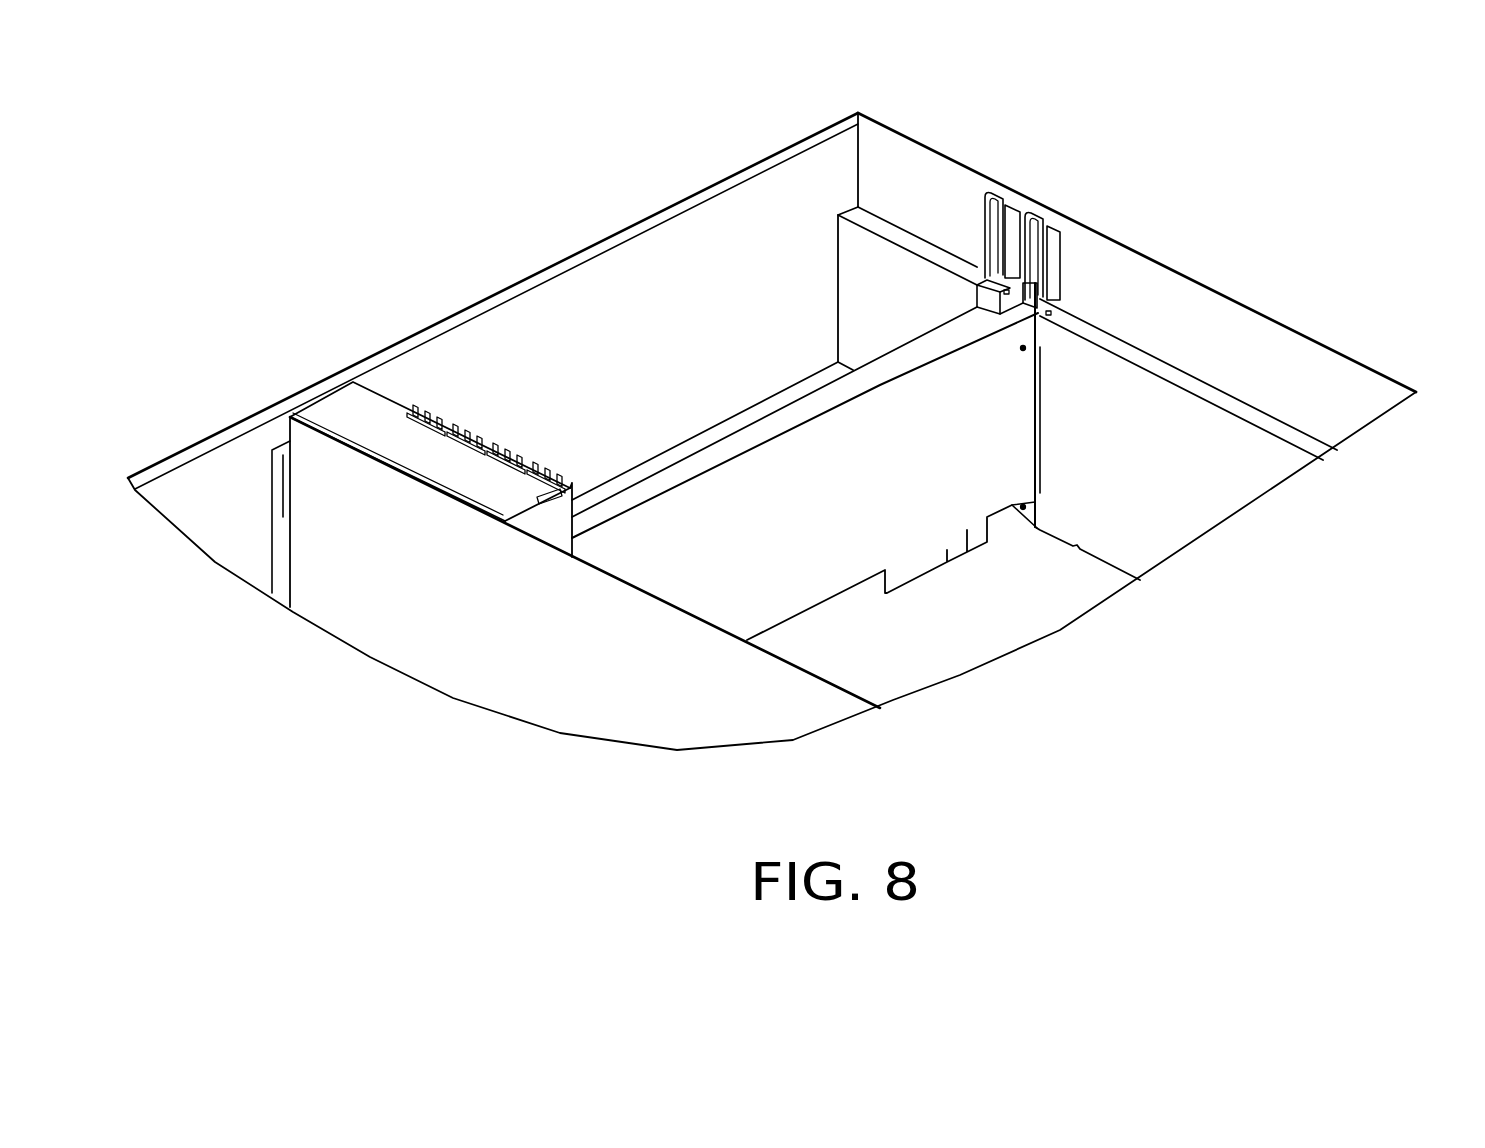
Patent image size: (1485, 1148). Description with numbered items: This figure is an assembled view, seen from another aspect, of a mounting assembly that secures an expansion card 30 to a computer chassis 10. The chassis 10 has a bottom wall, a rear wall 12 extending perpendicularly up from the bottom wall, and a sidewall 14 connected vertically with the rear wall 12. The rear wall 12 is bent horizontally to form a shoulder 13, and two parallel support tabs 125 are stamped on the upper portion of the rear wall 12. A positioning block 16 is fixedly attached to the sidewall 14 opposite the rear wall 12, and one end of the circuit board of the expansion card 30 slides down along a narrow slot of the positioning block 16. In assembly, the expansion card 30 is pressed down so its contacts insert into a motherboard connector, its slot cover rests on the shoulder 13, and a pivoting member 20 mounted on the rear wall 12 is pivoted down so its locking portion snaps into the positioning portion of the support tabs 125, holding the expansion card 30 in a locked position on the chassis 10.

The computer chassis 10 is at (1205, 283).
The rear wall 12 is at (1323, 397).
The shoulder 13 is at (1217, 397).
The sidewall 14 is at (486, 336).
The positioning block 16 is at (343, 410).
The pivoting member 20 is at (1032, 306).
The expansion card 30 is at (860, 530).
The support tab 125 is at (1041, 235).